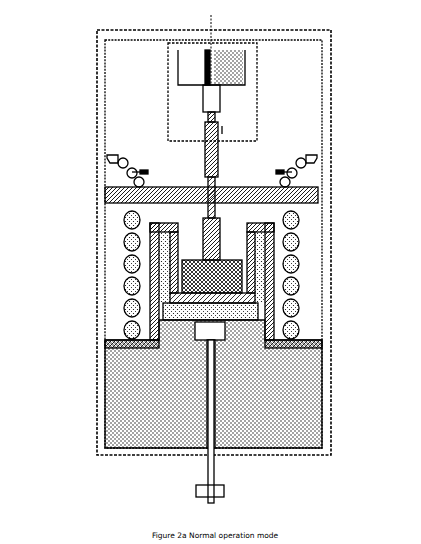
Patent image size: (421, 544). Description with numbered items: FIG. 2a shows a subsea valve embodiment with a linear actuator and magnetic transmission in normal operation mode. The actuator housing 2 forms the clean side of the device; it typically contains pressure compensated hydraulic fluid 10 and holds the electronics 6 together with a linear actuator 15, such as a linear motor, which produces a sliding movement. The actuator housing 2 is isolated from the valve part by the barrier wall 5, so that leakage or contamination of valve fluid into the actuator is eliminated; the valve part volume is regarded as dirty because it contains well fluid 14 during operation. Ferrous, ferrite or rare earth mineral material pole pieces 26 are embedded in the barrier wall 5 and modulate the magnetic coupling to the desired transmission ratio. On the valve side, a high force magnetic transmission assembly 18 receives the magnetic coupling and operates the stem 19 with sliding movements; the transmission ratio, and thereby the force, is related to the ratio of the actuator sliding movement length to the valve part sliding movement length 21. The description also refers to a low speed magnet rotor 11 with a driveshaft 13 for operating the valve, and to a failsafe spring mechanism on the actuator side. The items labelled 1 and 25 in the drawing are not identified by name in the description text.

The support foot 1 is at (255, 454).
The actuator housing 2 is at (322, 97).
The barrier wall 5 is at (274, 245).
The electronics 6 is at (183, 79).
The pressure compensated hydraulic fluid 10 is at (143, 140).
The low speed magnet rotor 11 is at (138, 169).
The driveshaft 13 is at (172, 360).
The well fluid 14 is at (203, 97).
The linear actuator 15 is at (130, 327).
The high force magnetic transmission assembly 18 is at (168, 303).
The stem 19 is at (197, 383).
The valve part sliding movement length 21 is at (256, 307).
The cup outer wall 25 is at (150, 276).
The pole pieces 26 is at (170, 288).